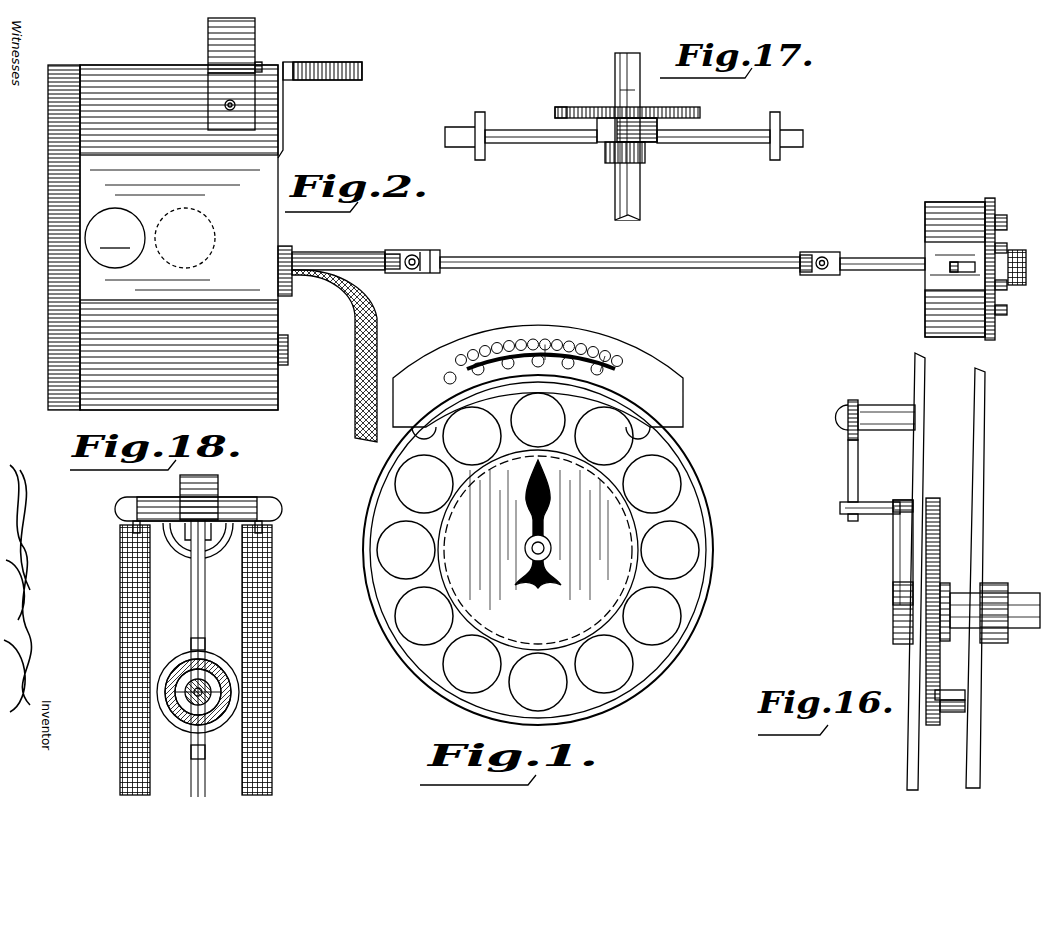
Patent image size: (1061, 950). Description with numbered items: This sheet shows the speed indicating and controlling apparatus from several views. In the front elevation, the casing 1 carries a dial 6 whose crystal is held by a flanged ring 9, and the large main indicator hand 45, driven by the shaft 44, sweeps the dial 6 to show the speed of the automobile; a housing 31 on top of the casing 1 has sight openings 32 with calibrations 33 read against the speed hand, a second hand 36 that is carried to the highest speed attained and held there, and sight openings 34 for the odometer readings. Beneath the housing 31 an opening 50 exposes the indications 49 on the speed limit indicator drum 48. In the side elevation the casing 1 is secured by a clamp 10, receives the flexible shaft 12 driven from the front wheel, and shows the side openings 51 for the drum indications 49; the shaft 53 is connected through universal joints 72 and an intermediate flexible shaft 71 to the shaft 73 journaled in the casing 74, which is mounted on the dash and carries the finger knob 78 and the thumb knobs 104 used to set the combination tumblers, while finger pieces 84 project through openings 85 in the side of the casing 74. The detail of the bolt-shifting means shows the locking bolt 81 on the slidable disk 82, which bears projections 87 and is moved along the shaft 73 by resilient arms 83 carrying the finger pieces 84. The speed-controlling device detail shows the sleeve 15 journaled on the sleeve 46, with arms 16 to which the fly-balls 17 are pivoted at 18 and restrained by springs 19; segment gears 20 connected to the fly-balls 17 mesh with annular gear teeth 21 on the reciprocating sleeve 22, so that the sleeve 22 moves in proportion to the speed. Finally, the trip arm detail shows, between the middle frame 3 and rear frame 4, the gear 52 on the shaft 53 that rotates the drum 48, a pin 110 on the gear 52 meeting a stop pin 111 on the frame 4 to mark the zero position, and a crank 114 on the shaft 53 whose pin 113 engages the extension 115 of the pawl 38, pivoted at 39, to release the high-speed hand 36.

In FIG. 2, the casing 1 is at (170, 130).
In FIG. 16, the middle frame 3 is at (908, 745).
In FIG. 16, the rear frame 4 is at (968, 750).
In FIG. 1, the dial 6 is at (628, 553).
In FIG. 2, the flanged ring 9 is at (60, 122).
In FIG. 1, the flanged ring 9 is at (694, 462).
In FIG. 2, the clamp 10 is at (310, 68).
In FIG. 2, the flexible shaft 12 is at (355, 358).
In FIG. 18, the sleeve 15 is at (232, 710).
In FIG. 18, the arms 16 is at (206, 632).
In FIG. 18, the fly-balls 17 is at (213, 560).
In FIG. 18, the pivots 18 is at (220, 492).
In FIG. 18, the springs 19 is at (275, 560).
In FIG. 18, the segment gears 20 is at (192, 630).
In FIG. 18, the annular gear teeth 21 is at (228, 670).
In FIG. 18, the reciprocating sleeve 22 is at (228, 694).
In FIG. 2, the housing 31 is at (208, 32).
In FIG. 1, the housing 31 is at (462, 335).
In FIG. 1, the sight openings 32 is at (556, 340).
In FIG. 1, the calibrations 33 is at (603, 352).
In FIG. 1, the sight openings 34 is at (522, 350).
In FIG. 1, the indicating hand 36 is at (458, 358).
In FIG. 16, the pawl 38 is at (853, 400).
In FIG. 16, the pivot 39 is at (840, 412).
In FIG. 18, the shaft 44 is at (185, 690).
In FIG. 1, the shaft 44 is at (525, 548).
In FIG. 1, the main indicator hand 45 is at (548, 525).
In FIG. 18, the sleeve 46 is at (210, 722).
In FIG. 2, the speed limit indicator drum 48 is at (128, 262).
In FIG. 1, the speed limit indicator drum 48 is at (546, 438).
In FIG. 2, the indications 49 is at (125, 215).
In FIG. 1, the indications 49 is at (530, 440).
In FIG. 1, the front opening 50 is at (560, 404).
In FIG. 2, the side openings 51 is at (110, 266).
In FIG. 16, the gear 52 is at (935, 498).
In FIG. 2, the shaft 53 is at (345, 256).
In FIG. 16, the shaft 53 is at (1020, 595).
In FIG. 2, the intermediate flexible shaft 71 is at (530, 257).
In FIG. 2, the universal joints 72 is at (420, 250).
In FIG. 2, the shaft 73 is at (870, 258).
In FIG. 17, the shaft 73 is at (618, 72).
In FIG. 2, the casing 74 is at (925, 320).
In FIG. 2, the finger knob 78 is at (1022, 262).
In FIG. 17, the locking bolt 81 is at (625, 55).
In FIG. 17, the disk 82 is at (600, 107).
In FIG. 17, the resilient arms 83 is at (597, 140).
In FIG. 2, the finger pieces 84 is at (950, 268).
In FIG. 17, the finger pieces 84 is at (462, 142).
In FIG. 2, the openings 85 is at (968, 262).
In FIG. 17, the projections 87 is at (555, 100).
In FIG. 2, the thumb knobs 104 is at (1003, 215).
In FIG. 16, the pin 110 is at (955, 695).
In FIG. 16, the stop pin 111 is at (965, 730).
In FIG. 16, the pin 113 is at (870, 514).
In FIG. 16, the crank 114 is at (896, 568).
In FIG. 16, the extension 115 is at (848, 470).